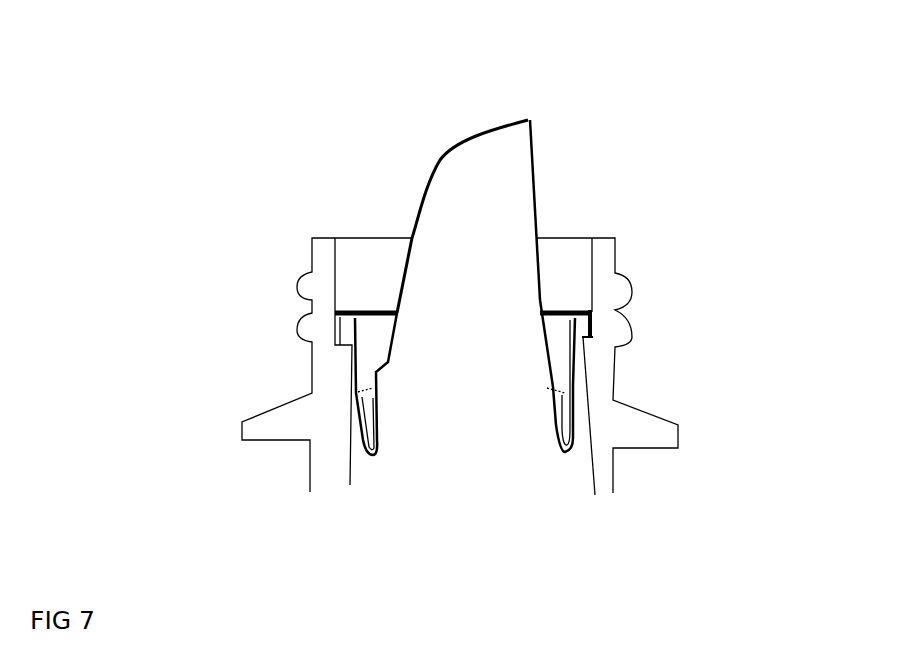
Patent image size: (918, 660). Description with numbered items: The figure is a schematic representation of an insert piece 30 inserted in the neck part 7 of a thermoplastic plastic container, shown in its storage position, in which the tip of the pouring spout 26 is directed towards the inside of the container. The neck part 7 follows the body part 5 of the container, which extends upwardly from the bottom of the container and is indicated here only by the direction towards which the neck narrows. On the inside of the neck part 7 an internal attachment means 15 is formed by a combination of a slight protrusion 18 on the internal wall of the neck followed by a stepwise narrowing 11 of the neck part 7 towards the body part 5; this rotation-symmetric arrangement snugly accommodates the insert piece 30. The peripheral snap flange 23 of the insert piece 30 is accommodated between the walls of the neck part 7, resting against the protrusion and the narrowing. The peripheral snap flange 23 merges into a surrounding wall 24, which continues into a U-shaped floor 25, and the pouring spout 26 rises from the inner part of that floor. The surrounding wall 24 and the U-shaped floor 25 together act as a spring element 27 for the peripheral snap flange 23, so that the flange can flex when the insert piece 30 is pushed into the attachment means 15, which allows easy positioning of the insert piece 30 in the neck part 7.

The body part 5 is at (333, 477).
The neck part 7 is at (602, 385).
The stepwise narrowing 11 is at (343, 353).
The internal attachment means 15 is at (356, 366).
The slight protrusion 18 is at (338, 302).
The peripheral snap flange 23 is at (580, 325).
The surrounding wall 24 is at (377, 380).
The U-shaped floor 25 is at (566, 426).
The pouring spout 26 is at (513, 180).
The spring element 27 is at (380, 413).
The insert piece 30 is at (497, 119).